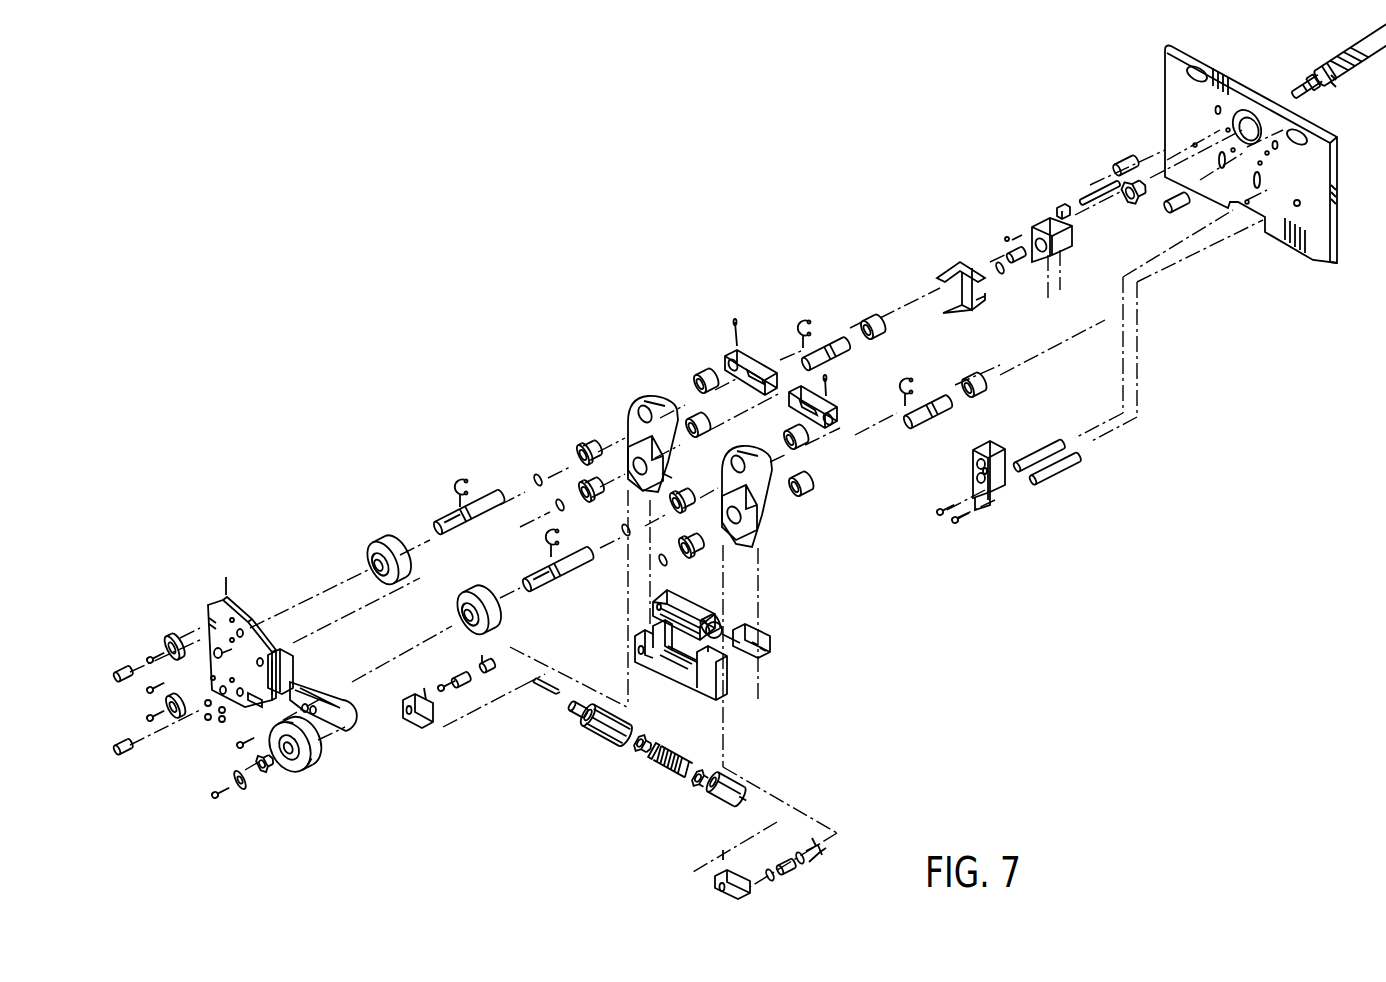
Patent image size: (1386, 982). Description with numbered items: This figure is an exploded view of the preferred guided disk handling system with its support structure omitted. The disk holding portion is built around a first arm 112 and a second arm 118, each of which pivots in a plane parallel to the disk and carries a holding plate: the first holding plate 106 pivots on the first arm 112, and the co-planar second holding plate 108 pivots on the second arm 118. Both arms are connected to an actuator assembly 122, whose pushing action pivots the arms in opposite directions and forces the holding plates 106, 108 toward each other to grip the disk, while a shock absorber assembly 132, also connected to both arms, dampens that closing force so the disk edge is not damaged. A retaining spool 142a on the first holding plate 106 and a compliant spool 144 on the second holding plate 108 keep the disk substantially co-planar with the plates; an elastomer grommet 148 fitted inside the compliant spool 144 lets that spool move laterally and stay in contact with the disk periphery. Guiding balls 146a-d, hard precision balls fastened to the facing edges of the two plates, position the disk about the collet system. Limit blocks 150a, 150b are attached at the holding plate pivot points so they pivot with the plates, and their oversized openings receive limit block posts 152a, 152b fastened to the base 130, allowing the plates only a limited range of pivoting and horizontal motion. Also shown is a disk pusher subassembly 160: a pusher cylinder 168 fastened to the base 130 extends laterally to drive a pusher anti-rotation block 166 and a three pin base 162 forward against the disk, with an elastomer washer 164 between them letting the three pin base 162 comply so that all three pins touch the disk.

The first holding plate 106 is at (216, 602).
The second holding plate 108 is at (350, 730).
The first arm 112 is at (650, 401).
The second arm 118 is at (777, 515).
The actuator assembly 122 is at (700, 592).
The base 130 is at (1175, 78).
The shock absorber assembly 132 is at (670, 765).
The retaining spool 142a is at (166, 640).
The compliant spool 144 is at (310, 768).
The guiding balls 146a-d is at (209, 722).
The elastomer grommet 148 is at (268, 778).
The limit block 150a is at (724, 358).
The limit block 150b is at (845, 418).
The limit block post 152a is at (1120, 165).
The limit block post 152b is at (1182, 205).
The disk pusher subassembly 160 is at (988, 118).
The three pin base 162 is at (985, 290).
The elastomer washer 164 is at (1000, 268).
The pusher anti-rotation block 166 is at (1035, 222).
The pusher cylinder 168 is at (1348, 36).